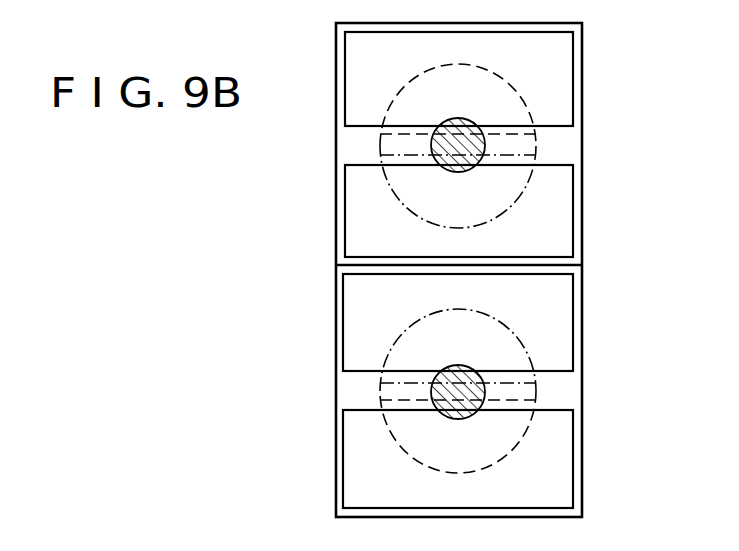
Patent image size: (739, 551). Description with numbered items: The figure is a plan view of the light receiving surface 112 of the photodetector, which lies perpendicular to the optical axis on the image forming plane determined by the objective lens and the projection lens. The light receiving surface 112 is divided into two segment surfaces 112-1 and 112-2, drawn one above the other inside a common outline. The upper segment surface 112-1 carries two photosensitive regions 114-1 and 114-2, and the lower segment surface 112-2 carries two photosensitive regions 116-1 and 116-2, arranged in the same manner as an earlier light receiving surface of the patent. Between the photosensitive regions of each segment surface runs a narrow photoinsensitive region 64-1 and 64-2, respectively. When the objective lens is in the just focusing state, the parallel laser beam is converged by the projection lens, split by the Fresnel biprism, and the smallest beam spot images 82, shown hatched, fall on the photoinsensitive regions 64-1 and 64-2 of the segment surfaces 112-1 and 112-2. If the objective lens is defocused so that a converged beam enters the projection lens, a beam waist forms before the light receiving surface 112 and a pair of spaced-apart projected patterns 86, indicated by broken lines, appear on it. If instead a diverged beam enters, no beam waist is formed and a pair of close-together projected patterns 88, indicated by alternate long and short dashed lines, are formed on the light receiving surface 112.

The light receiving surface 112 is at (336, 182).
The segment surface 112-1 is at (582, 97).
The segment surface 112-2 is at (582, 340).
The photosensitive region 114-1 is at (353, 53).
The photosensitive region 114-2 is at (355, 220).
The photosensitive region 116-1 is at (357, 300).
The photosensitive region 116-2 is at (355, 449).
The photoinsensitive region 64-1 is at (567, 148).
The photoinsensitive region 64-2 is at (566, 392).
The smallest beam spot image 82 is at (452, 120).
The projected pattern 86 is at (505, 80).
The projected pattern 88 is at (418, 216).